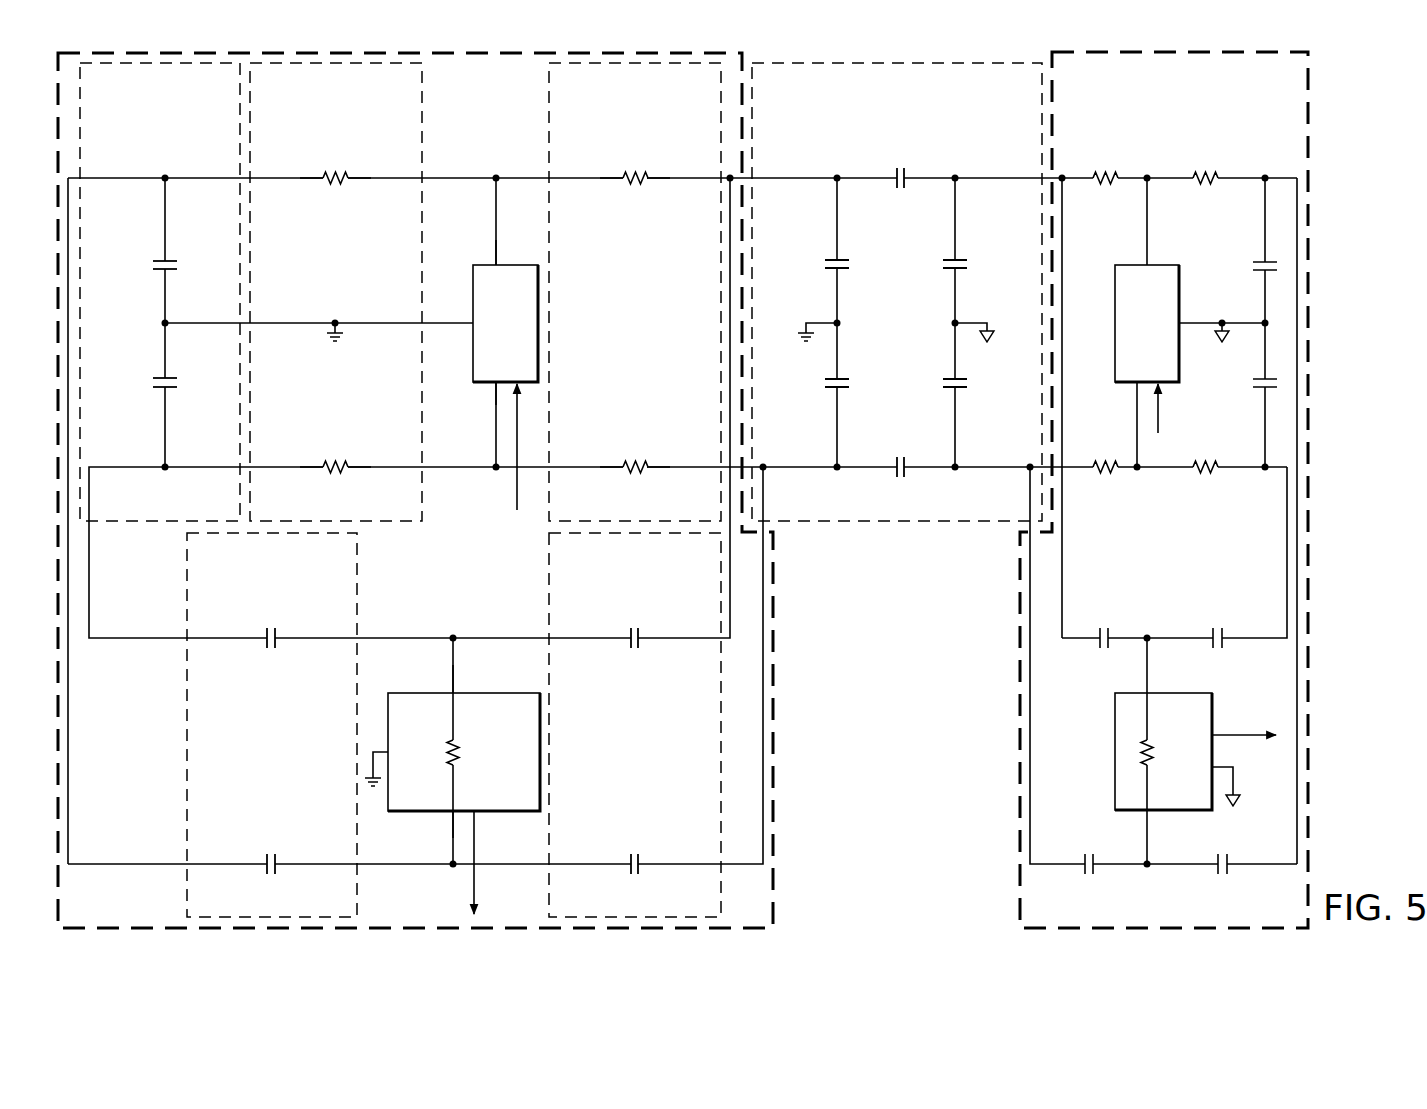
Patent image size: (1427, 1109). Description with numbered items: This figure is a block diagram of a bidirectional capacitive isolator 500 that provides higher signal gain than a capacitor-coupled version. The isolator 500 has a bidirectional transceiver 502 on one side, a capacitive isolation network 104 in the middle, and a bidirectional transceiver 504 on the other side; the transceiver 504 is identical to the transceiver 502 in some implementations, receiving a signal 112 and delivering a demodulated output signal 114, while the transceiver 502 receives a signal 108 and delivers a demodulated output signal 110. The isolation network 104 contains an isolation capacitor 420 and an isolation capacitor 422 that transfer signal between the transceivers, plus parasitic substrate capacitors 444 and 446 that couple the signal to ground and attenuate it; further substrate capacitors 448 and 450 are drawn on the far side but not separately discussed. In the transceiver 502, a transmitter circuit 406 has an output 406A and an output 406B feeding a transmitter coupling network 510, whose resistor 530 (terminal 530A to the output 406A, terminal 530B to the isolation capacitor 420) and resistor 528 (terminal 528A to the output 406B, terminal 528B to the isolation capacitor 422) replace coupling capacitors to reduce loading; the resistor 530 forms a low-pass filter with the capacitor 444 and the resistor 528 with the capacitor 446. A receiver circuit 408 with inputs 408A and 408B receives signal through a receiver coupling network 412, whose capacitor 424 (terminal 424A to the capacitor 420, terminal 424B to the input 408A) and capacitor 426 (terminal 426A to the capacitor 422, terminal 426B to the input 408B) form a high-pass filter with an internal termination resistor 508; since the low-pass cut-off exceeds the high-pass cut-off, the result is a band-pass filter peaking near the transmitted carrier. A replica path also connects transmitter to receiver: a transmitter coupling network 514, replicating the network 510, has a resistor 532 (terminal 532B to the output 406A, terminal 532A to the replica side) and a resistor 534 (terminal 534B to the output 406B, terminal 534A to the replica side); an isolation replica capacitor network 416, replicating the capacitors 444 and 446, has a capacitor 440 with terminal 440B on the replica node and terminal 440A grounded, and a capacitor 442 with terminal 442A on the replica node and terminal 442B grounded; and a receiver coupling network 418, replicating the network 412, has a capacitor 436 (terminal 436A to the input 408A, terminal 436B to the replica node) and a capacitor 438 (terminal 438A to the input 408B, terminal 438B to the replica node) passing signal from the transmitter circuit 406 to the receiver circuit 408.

The bidirectional capacitive isolator 500 is at (1362, 90).
The bidirectional transceiver 502 is at (778, 655).
The bidirectional transceiver 504 is at (1314, 410).
The capacitive isolation network 104 is at (936, 530).
The signal 108 is at (516, 490).
The output signal 110 is at (472, 888).
The signal 112 is at (1160, 420).
The output signal 114 is at (1237, 733).
The transmitter circuit 406 is at (487, 357).
The output 406A is at (492, 264).
The output 406B is at (490, 385).
The receiver circuit 408 is at (517, 783).
The input 408A is at (447, 688).
The input 408B is at (448, 818).
The receiver coupling network 412 is at (547, 609).
The isolation replica capacitor network 416 is at (158, 530).
The receiver coupling network 418 is at (185, 768).
The isolation capacitor 420 is at (898, 192).
The isolation capacitor 422 is at (898, 458).
The capacitor 424 is at (636, 679).
The terminal 424A is at (642, 644).
The terminal 424B is at (627, 644).
The capacitor 426 is at (636, 826).
The terminal 426A is at (626, 805).
The terminal 426B is at (627, 858).
The capacitor 436 is at (273, 678).
The terminal 436A is at (279, 644).
The terminal 436B is at (263, 644).
The capacitor 438 is at (273, 825).
The terminal 438A is at (262, 805).
The terminal 438B is at (263, 858).
The capacitor 440 is at (162, 260).
The terminal 440A is at (172, 271).
The terminal 440B is at (196, 246).
The capacitor 442 is at (162, 374).
The terminal 442A is at (172, 389).
The terminal 442B is at (196, 362).
The parasitic substrate capacitor 444 is at (850, 266).
The parasitic substrate capacitor 446 is at (850, 387).
The third substrate capacitor 448 is at (945, 270).
The fourth substrate capacitor 450 is at (945, 382).
The internal termination resistor 508 is at (447, 752).
The transmitter coupling network 510 is at (547, 138).
The transmitter coupling network 514 is at (426, 110).
The resistor 528 is at (635, 428).
The terminal 528A is at (620, 462).
The terminal 528B is at (678, 448).
The resistor 530 is at (635, 223).
The terminal 530A is at (620, 183).
The terminal 530B is at (652, 183).
The resistor 532 is at (335, 222).
The terminal 532A is at (320, 183).
The terminal 532B is at (352, 183).
The resistor 534 is at (335, 428).
The terminal 534A is at (320, 462).
The terminal 534B is at (378, 448).